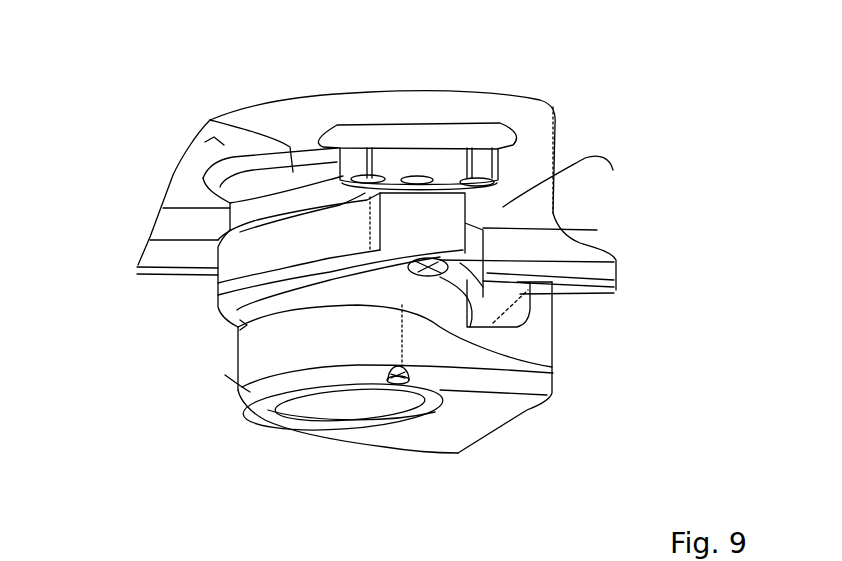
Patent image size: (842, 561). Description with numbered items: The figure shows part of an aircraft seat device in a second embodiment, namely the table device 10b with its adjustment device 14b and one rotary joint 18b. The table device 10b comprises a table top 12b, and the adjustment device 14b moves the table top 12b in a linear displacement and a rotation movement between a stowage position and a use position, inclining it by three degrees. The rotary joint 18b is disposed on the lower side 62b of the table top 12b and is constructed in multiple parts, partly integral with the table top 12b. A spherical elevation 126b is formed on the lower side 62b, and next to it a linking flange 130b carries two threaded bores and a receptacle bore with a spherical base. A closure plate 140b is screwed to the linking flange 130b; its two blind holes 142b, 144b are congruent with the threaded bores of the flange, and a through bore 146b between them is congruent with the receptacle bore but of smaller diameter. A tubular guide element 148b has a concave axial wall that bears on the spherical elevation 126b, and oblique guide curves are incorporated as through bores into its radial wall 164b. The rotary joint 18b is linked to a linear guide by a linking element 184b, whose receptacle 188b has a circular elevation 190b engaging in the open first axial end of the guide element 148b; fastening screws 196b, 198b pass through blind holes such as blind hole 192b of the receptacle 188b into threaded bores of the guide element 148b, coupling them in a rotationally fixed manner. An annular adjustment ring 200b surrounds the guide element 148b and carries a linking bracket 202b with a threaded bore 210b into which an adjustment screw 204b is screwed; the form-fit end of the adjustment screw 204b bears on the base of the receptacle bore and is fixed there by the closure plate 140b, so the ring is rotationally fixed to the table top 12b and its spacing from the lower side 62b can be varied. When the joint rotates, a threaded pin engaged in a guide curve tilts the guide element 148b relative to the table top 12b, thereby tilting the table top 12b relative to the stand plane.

The table device 10b is at (598, 117).
The table top 12b is at (525, 112).
The adjustment device 14b is at (617, 341).
The rotary joint 18b is at (200, 350).
The lower side 62b is at (217, 145).
The elevation 126b is at (210, 120).
The linking flange 130b is at (473, 172).
The closure plate 140b is at (413, 150).
The blind hole 142b is at (362, 160).
The blind hole 144b is at (474, 140).
The through bore 146b is at (417, 172).
The guide element 148b is at (553, 367).
The radial wall 164b is at (251, 368).
The linking element 184b is at (574, 353).
The receptacle 188b is at (290, 372).
The circular elevation 190b is at (320, 438).
The blind hole 192b is at (425, 407).
The fastening screw 196b is at (308, 442).
The fastening screw 198b is at (387, 400).
The adjustment ring 200b is at (260, 250).
The linking bracket 202b is at (580, 165).
The adjustment screw 204b is at (618, 286).
The threaded bore 210b is at (213, 283).